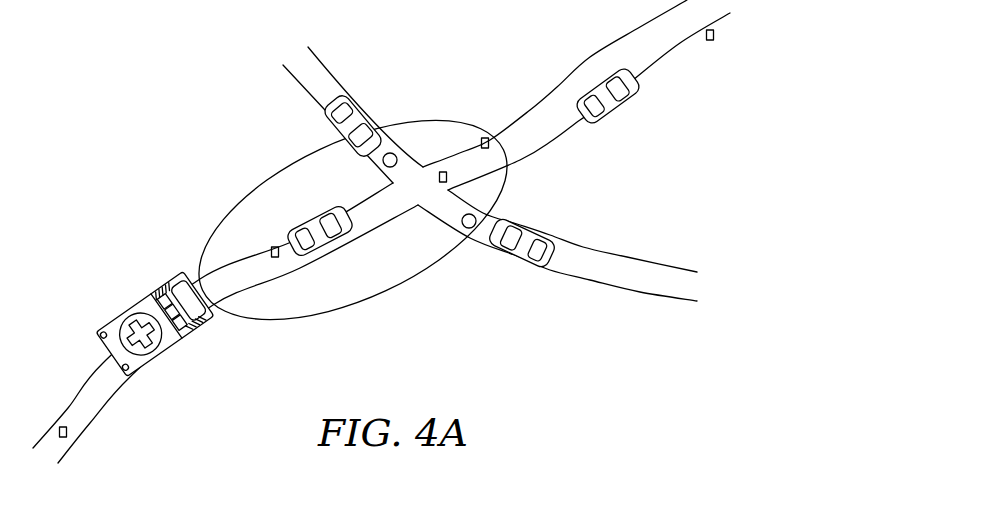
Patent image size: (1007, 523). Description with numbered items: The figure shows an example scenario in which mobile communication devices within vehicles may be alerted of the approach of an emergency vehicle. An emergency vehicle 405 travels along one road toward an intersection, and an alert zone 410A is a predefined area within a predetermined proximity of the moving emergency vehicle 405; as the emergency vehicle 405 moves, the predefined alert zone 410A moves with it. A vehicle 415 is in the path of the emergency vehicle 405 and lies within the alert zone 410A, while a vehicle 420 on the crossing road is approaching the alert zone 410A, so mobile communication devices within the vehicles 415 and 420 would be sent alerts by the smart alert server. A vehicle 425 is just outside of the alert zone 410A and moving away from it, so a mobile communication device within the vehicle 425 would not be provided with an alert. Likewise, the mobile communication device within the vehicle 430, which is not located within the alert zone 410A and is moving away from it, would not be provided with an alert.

The emergency vehicle 405 is at (137, 304).
The alert zone 410A is at (500, 190).
The vehicle 415 is at (322, 243).
The vehicle 420 is at (367, 122).
The vehicle 425 is at (522, 248).
The vehicle 430 is at (607, 105).